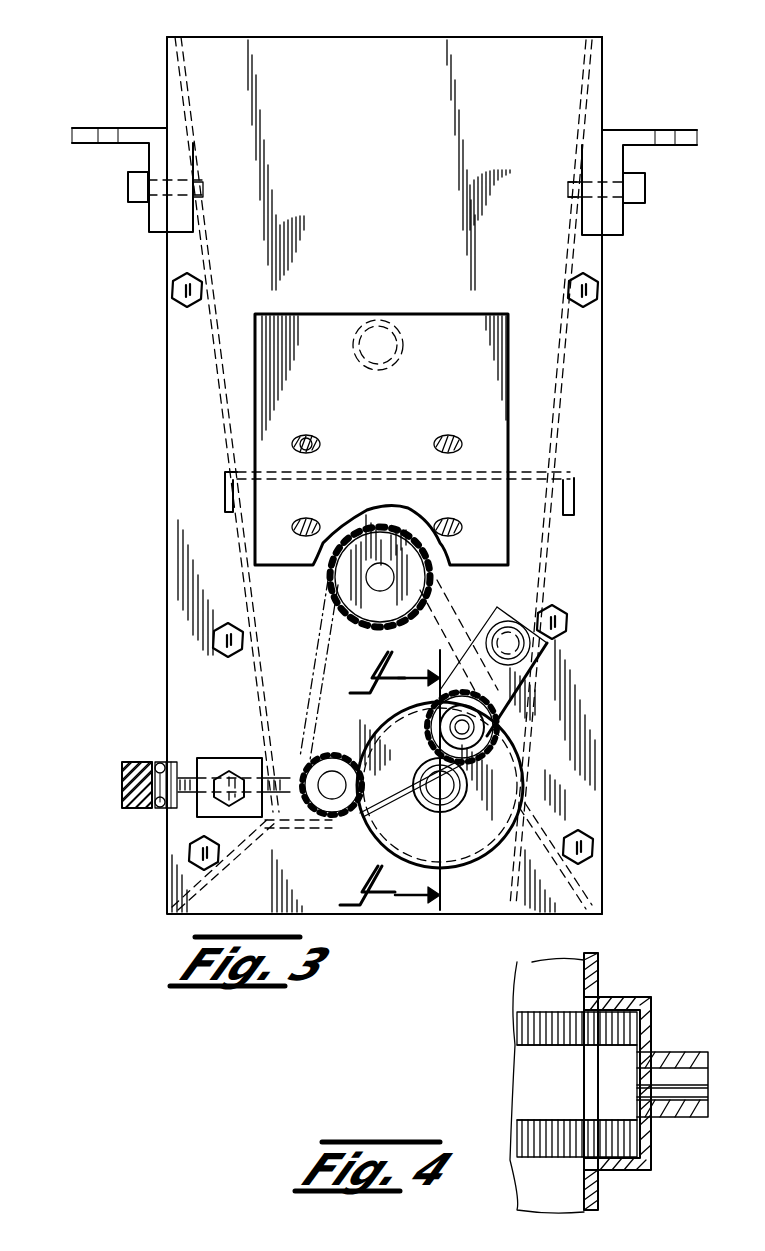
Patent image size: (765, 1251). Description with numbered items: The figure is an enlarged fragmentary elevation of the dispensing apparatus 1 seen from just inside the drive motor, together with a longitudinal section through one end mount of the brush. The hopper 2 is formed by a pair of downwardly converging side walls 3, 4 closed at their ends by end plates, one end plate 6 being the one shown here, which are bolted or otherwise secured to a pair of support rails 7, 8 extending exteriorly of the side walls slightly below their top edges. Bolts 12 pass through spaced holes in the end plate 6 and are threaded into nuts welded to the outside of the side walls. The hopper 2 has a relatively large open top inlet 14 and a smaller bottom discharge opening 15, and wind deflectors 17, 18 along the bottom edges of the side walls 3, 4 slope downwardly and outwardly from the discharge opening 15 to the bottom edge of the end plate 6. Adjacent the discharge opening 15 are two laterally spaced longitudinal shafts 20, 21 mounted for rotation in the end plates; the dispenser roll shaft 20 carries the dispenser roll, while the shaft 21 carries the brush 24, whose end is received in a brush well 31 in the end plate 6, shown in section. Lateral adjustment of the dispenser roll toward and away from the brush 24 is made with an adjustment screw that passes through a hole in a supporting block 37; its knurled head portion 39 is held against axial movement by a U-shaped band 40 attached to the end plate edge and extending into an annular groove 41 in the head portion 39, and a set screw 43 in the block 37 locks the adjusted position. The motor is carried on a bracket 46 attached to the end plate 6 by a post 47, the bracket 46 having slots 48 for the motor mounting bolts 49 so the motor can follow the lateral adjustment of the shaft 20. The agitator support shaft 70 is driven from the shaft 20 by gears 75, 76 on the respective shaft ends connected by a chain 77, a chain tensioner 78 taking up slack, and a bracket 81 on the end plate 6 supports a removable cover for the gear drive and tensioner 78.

In FIG. 3, the dispensing apparatus 1 is at (158, 98).
In FIG. 3, the hopper 2 is at (204, 32).
In FIG. 3, the side wall 3 is at (207, 340).
In FIG. 3, the side wall 4 is at (562, 352).
In FIG. 3, the end plate 6 is at (205, 588).
In FIG. 4, the end plate 6 is at (598, 1195).
In FIG. 3, the support rail 7 is at (72, 135).
In FIG. 3, the support rail 8 is at (697, 137).
In FIG. 3, the bolts 12 is at (180, 290).
In FIG. 3, the open top inlet 14 is at (574, 36).
In FIG. 3, the bottom discharge opening 15 is at (330, 830).
In FIG. 3, the wind deflector 17 is at (178, 893).
In FIG. 3, the wind deflector 18 is at (580, 883).
In FIG. 3, the dispenser roll shaft 20 is at (332, 782).
In FIG. 3, the brush shaft 21 is at (455, 795).
In FIG. 4, the brush shaft 21 is at (676, 1075).
In FIG. 3, the brush 24 is at (515, 780).
In FIG. 4, the brush 24 is at (520, 1015).
In FIG. 3, the brush well 31 is at (470, 855).
In FIG. 4, the brush well 31 is at (625, 997).
In FIG. 3, the block 37 is at (206, 758).
In FIG. 3, the knurled head portion 39 is at (122, 790).
In FIG. 3, the U-shaped band 40 is at (158, 806).
In FIG. 3, the annular groove 41 is at (150, 762).
In FIG. 3, the set screw 43 is at (229, 772).
In FIG. 3, the bracket 46 is at (333, 338).
In FIG. 3, the post 47 is at (402, 330).
In FIG. 3, the slots 48 is at (304, 440).
In FIG. 3, the motor mounting bolts 49 is at (318, 444).
In FIG. 3, the agitator support shaft 70 is at (378, 574).
In FIG. 3, the gear 75 is at (345, 808).
In FIG. 3, the gear 76 is at (397, 548).
In FIG. 3, the chain 77 is at (450, 615).
In FIG. 3, the chain tensioner 78 is at (515, 703).
In FIG. 3, the bracket 81 is at (222, 489).